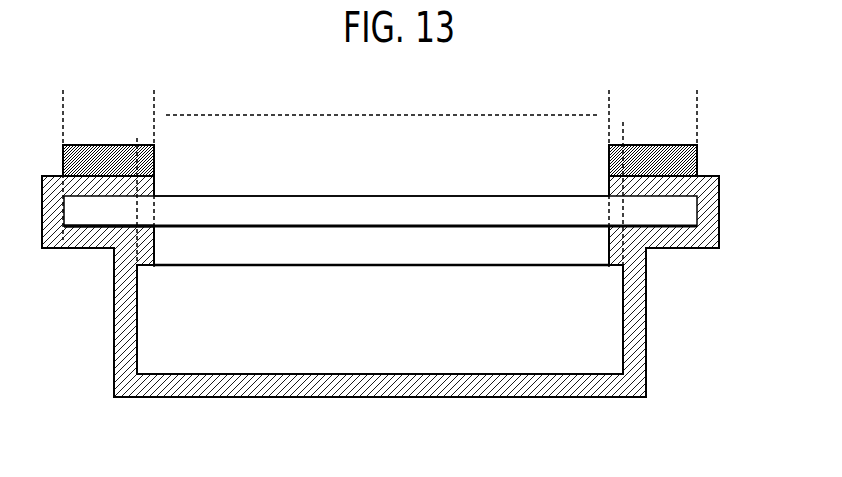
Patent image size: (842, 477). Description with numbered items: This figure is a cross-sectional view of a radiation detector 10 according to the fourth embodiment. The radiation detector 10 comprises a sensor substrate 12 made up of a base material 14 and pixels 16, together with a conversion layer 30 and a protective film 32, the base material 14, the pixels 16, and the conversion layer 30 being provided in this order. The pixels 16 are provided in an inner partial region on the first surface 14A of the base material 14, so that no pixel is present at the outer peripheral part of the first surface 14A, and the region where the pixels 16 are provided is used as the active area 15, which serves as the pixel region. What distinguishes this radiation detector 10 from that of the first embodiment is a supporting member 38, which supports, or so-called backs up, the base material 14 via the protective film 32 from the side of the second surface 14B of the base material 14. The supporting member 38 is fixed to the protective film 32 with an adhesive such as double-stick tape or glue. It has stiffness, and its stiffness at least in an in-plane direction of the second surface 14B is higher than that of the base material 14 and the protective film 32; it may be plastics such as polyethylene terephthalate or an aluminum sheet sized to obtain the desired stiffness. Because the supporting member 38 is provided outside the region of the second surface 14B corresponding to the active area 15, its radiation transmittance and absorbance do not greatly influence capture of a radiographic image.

The radiation detector 10 is at (414, 269).
The sensor substrate 12 is at (414, 224).
The base material 14 is at (389, 224).
The first surface 14A is at (113, 227).
The second surface 14B is at (437, 195).
The active area 15 is at (609, 115).
The pixels 16 is at (587, 242).
The conversion layer 30 is at (610, 319).
The protective film 32 is at (637, 368).
The supporting member 38 is at (656, 157).